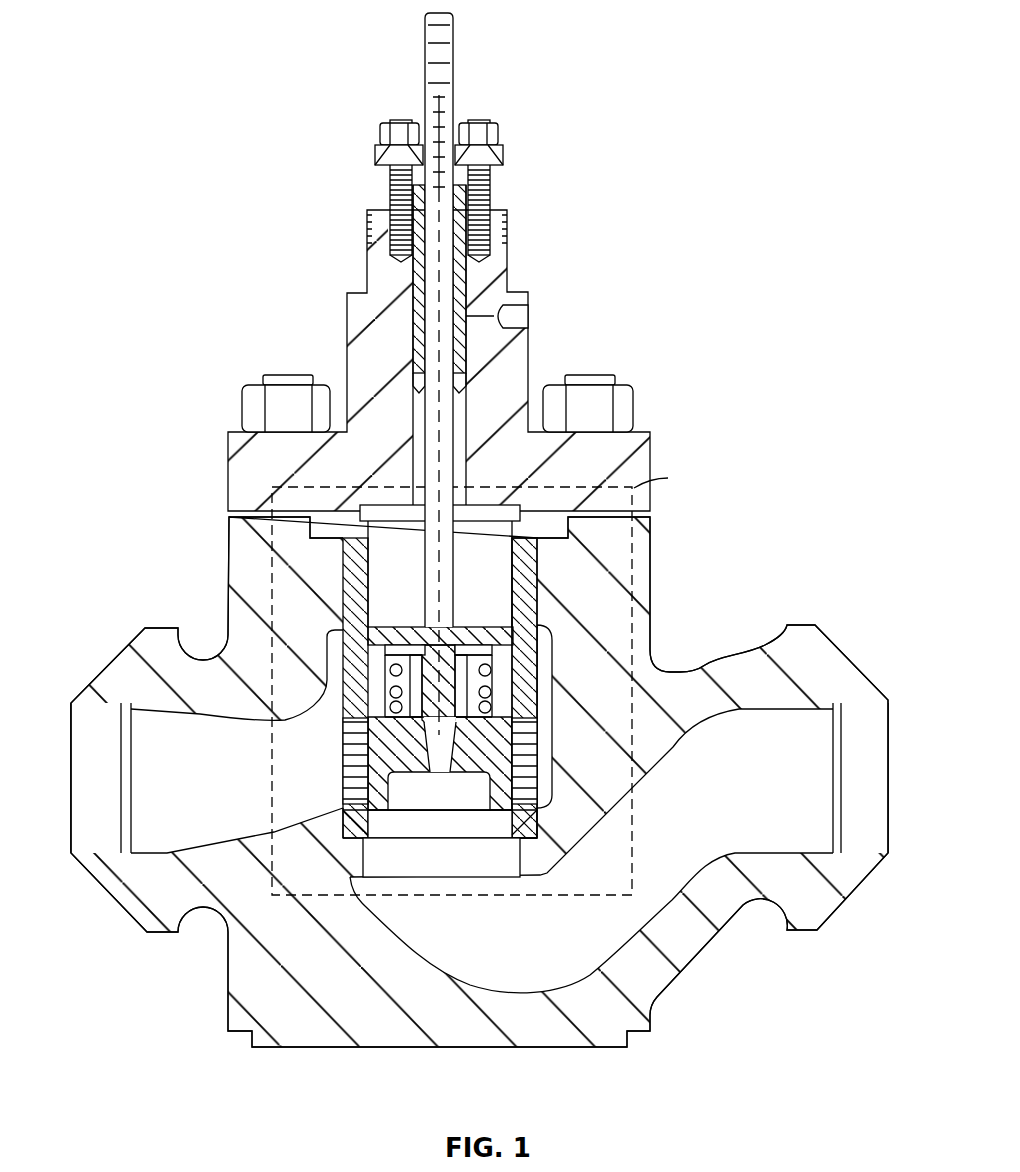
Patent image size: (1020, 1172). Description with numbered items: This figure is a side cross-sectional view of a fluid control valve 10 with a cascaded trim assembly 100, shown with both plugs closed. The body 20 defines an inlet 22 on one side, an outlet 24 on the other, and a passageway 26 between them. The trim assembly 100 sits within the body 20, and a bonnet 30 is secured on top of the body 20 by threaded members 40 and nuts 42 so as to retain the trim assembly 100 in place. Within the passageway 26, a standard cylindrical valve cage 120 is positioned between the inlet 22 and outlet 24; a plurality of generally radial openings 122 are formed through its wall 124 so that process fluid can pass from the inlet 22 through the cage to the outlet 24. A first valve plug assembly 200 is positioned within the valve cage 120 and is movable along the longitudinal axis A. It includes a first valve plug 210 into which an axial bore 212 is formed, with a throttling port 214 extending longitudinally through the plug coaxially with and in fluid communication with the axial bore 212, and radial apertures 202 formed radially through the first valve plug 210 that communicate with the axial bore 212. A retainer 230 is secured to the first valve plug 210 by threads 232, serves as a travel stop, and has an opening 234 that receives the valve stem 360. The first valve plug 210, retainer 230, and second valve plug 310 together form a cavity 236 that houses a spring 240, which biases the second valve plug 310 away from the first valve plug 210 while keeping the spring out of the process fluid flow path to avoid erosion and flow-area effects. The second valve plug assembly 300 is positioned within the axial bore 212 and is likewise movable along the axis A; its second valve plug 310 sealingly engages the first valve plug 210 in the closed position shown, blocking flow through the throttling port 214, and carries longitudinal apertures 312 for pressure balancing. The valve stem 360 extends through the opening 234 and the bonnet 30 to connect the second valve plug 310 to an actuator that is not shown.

The fluid control valve 10 is at (168, 90).
The body 20 is at (248, 548).
The inlet 22 is at (88, 745).
The outlet 24 is at (878, 723).
The passageway 26 is at (455, 869).
The bonnet 30 is at (638, 445).
The threaded members 40 is at (282, 376).
The nuts 42 is at (250, 408).
The trim assembly 100 is at (555, 607).
The valve cage 120 is at (552, 545).
The radial openings 122 is at (540, 765).
The wall 124 is at (512, 600).
The first valve plug assembly 200 is at (417, 743).
The radial apertures 202 is at (342, 723).
The first valve plug 210 is at (397, 748).
The axial bore 212 is at (540, 748).
The throttling port 214 is at (465, 795).
The retainer 230 is at (277, 640).
The threads 232 is at (383, 702).
The opening 234 is at (414, 640).
The cavity 236 is at (390, 655).
The spring 240 is at (548, 670).
The second valve plug assembly 300 is at (576, 374).
The second valve plug 310 is at (422, 650).
The apertures 312 is at (462, 652).
The valve stem 360 is at (432, 456).
The longitudinal axis A is at (442, 396).